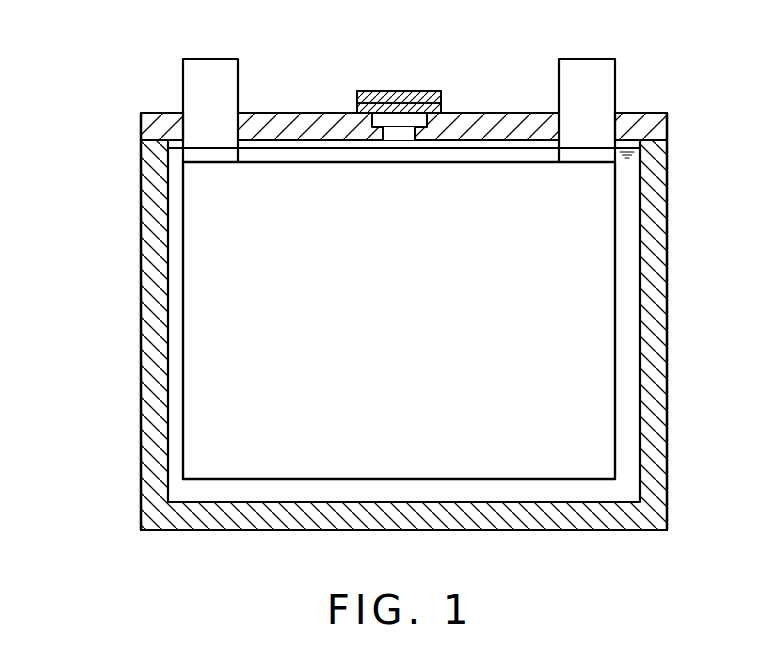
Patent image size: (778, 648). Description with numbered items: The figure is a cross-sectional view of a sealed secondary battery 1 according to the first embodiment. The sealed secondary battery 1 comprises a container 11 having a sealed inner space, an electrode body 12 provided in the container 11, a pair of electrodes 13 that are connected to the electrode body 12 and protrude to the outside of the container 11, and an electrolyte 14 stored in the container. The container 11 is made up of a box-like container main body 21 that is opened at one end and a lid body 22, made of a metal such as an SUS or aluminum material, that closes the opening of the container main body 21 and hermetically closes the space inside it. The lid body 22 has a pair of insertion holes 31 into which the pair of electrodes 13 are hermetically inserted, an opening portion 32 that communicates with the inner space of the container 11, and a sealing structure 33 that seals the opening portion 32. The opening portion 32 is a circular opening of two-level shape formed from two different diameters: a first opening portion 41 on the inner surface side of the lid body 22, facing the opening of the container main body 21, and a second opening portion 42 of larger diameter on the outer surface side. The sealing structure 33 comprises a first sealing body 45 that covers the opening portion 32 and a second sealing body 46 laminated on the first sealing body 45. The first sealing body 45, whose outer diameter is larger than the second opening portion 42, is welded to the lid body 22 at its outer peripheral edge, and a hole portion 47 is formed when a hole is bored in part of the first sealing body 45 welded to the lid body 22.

The sealed secondary battery 1 is at (112, 545).
The container 11 is at (67, 108).
The electrode body 12 is at (615, 268).
The electrodes 13 is at (211, 59).
The electrolyte 14 is at (630, 192).
The container main body 21 is at (140, 250).
The lid body 22 is at (140, 127).
The insertion holes 31 is at (184, 125).
The opening portion 32 is at (372, 118).
The sealing structure 33 is at (434, 82).
The first opening portion 41 is at (391, 135).
The second opening portion 42 is at (418, 130).
The first sealing body 45 is at (441, 107).
The second sealing body 46 is at (441, 95).
The hole portion 47 is at (378, 91).